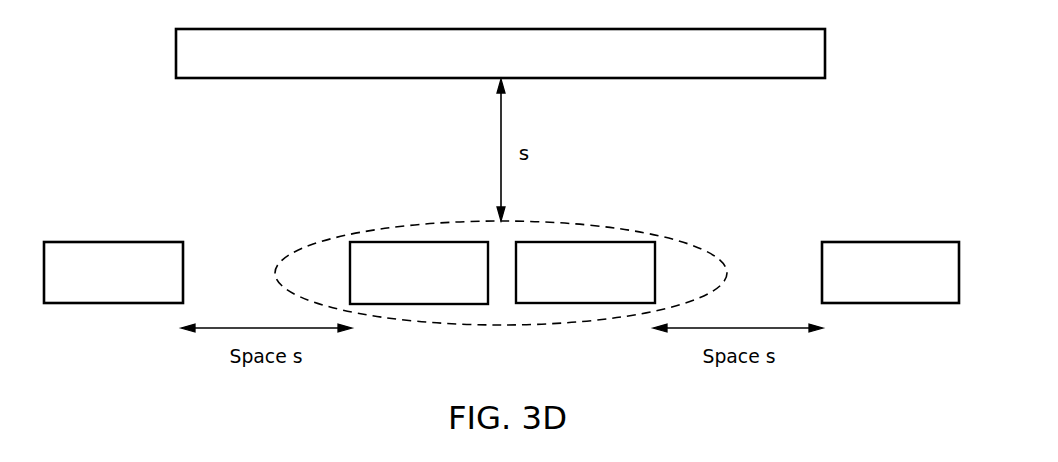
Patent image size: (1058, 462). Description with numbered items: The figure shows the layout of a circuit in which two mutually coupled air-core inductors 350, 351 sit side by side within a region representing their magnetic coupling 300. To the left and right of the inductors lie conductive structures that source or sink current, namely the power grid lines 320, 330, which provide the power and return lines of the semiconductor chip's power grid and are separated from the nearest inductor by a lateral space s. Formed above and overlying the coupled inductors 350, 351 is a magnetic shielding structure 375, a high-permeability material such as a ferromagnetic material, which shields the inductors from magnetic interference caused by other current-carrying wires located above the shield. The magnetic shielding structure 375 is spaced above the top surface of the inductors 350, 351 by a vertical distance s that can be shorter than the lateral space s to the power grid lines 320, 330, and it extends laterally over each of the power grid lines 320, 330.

The magnetic shielding structure 375 is at (826, 52).
The power grid line 320 is at (111, 242).
The power grid line 330 is at (890, 242).
The magnetic coupling 300 is at (679, 243).
The air-core inductor 350 is at (398, 285).
The air-core inductor 351 is at (567, 285).